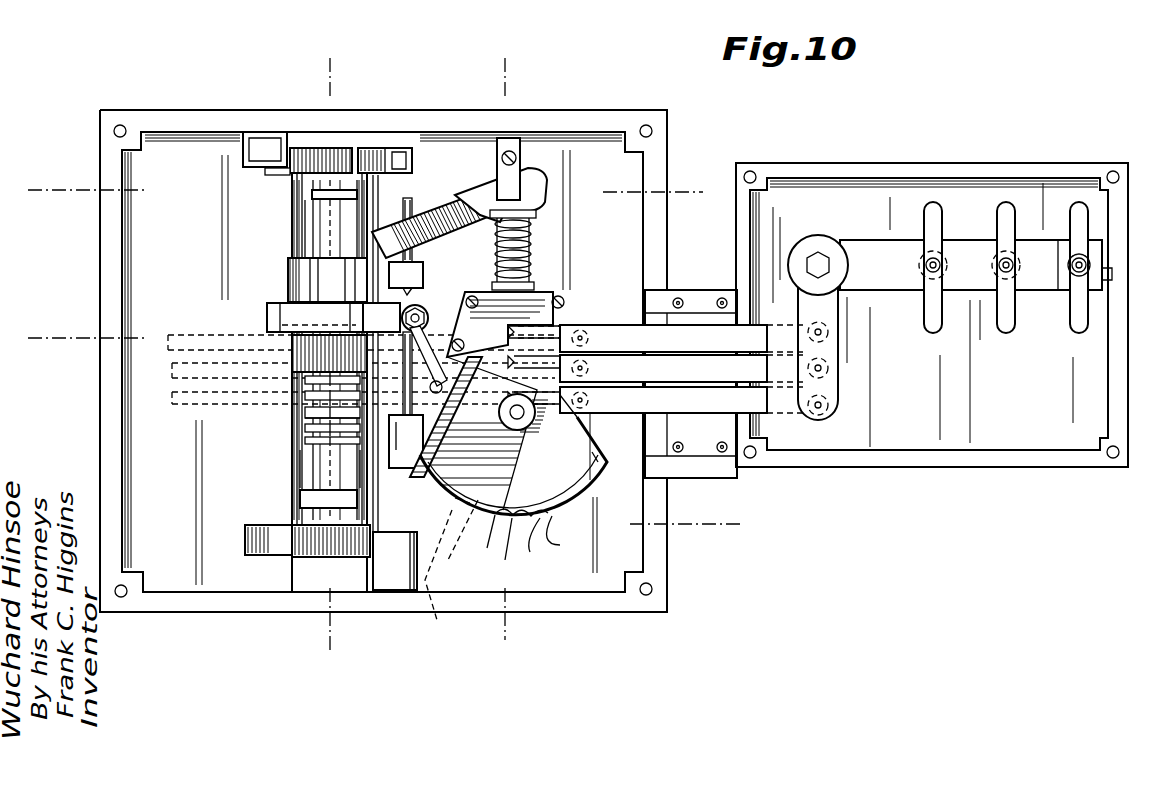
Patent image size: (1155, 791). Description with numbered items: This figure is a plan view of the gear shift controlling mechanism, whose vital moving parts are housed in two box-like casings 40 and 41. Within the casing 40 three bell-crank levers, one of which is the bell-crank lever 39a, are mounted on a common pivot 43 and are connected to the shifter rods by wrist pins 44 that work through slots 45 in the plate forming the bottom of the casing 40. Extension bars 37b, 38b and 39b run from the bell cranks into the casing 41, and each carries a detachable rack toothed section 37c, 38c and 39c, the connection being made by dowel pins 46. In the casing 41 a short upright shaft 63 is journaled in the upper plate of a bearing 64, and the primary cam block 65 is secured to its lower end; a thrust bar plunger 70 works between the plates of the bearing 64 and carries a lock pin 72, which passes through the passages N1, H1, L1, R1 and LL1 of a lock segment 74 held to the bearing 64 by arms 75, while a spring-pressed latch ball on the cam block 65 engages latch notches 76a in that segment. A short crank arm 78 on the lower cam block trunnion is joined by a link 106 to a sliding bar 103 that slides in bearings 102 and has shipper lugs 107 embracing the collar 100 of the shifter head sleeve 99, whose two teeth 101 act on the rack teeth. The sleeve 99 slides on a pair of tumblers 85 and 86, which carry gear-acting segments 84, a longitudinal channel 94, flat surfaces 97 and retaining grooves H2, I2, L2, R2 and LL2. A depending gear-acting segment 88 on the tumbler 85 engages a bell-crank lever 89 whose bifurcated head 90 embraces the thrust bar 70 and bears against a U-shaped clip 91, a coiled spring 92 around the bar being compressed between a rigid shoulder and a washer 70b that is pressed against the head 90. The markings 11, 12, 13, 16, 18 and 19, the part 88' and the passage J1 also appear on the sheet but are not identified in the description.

The section line 11 is at (373, 182).
The section line 12 is at (394, 424).
The axis line 13 is at (334, 355).
The shaft 16 is at (329, 382).
The supporting plate 18 is at (390, 381).
The axis line 19 is at (521, 347).
The extension bar 37b is at (682, 338).
The extension bar 38b is at (682, 368).
The extension bar 39b is at (682, 400).
The rack toothed bar 37c is at (548, 325).
The rack toothed bar 38c is at (522, 355).
The rack toothed bar 39c is at (553, 404).
The bell-crank lever 39a is at (908, 290).
The box-like casing 40 is at (1012, 163).
The box-like casing 41 is at (662, 548).
The common pivot 43 is at (820, 255).
The wrist pin 44 is at (926, 258).
The slot 45 is at (942, 324).
The dowel pin 46 is at (580, 322).
The short upright shaft 63 is at (508, 418).
The bearing 64 is at (562, 300).
The primary cam block 65 is at (508, 446).
The thrust bar plunger 70 is at (533, 262).
The washer 70b is at (537, 214).
The lock pin 72 is at (438, 573).
The lock segment 74 is at (600, 466).
The arm 75 is at (598, 428).
The latch notch 76a is at (542, 514).
The short crank arm 78 is at (466, 417).
The gear-acting segment 84 is at (385, 150).
The tumbler 85 is at (305, 210).
The tumbler 86 is at (300, 462).
The depending gear-acting segment 88 is at (317, 324).
The bearing bracket 88' is at (330, 363).
The bell-crank lever 89 is at (345, 148).
The bifurcated head 90 is at (508, 192).
The U-shaped clip 91 is at (512, 138).
The coiled spring 92 is at (533, 238).
The longitudinal channel 94 is at (305, 428).
The flat surface 97 is at (312, 194).
The shifter head 99 is at (300, 266).
The collar 100 is at (268, 318).
The tooth 101 is at (290, 323).
The bearing 102 is at (414, 262).
The sliding bar 103 is at (425, 176).
The link 106 is at (430, 330).
The shipper lug 107 is at (398, 333).
The lock pin passage H1 is at (463, 532).
The retaining groove H2 is at (305, 380).
The retaining groove I2 is at (305, 395).
The contact J1 is at (485, 539).
The lock pin passage L1 is at (503, 546).
The retaining groove L2 is at (305, 412).
The lock pin passage LL1 is at (564, 534).
The retaining groove LL2 is at (305, 441).
The lock pin passage N1 is at (455, 500).
The lock pin passage R1 is at (535, 541).
The retaining groove R2 is at (305, 418).